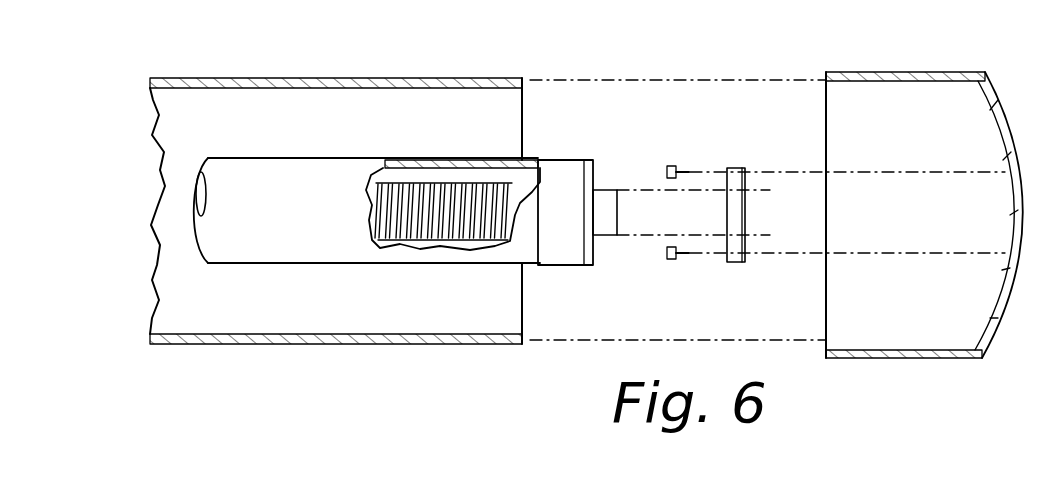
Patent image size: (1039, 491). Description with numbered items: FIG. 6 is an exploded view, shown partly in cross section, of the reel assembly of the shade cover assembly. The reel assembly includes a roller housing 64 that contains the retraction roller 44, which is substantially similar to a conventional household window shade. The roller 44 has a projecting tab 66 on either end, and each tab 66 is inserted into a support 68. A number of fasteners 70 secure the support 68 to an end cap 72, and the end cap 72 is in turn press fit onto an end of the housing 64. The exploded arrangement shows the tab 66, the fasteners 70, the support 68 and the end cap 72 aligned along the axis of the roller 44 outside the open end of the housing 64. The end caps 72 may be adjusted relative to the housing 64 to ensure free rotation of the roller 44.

The retraction roller 44 is at (335, 219).
The roller housing 64 is at (437, 80).
The projecting tab 66 is at (607, 190).
The support 68 is at (737, 262).
The fastener 70 is at (668, 165).
The end cap 72 is at (883, 72).